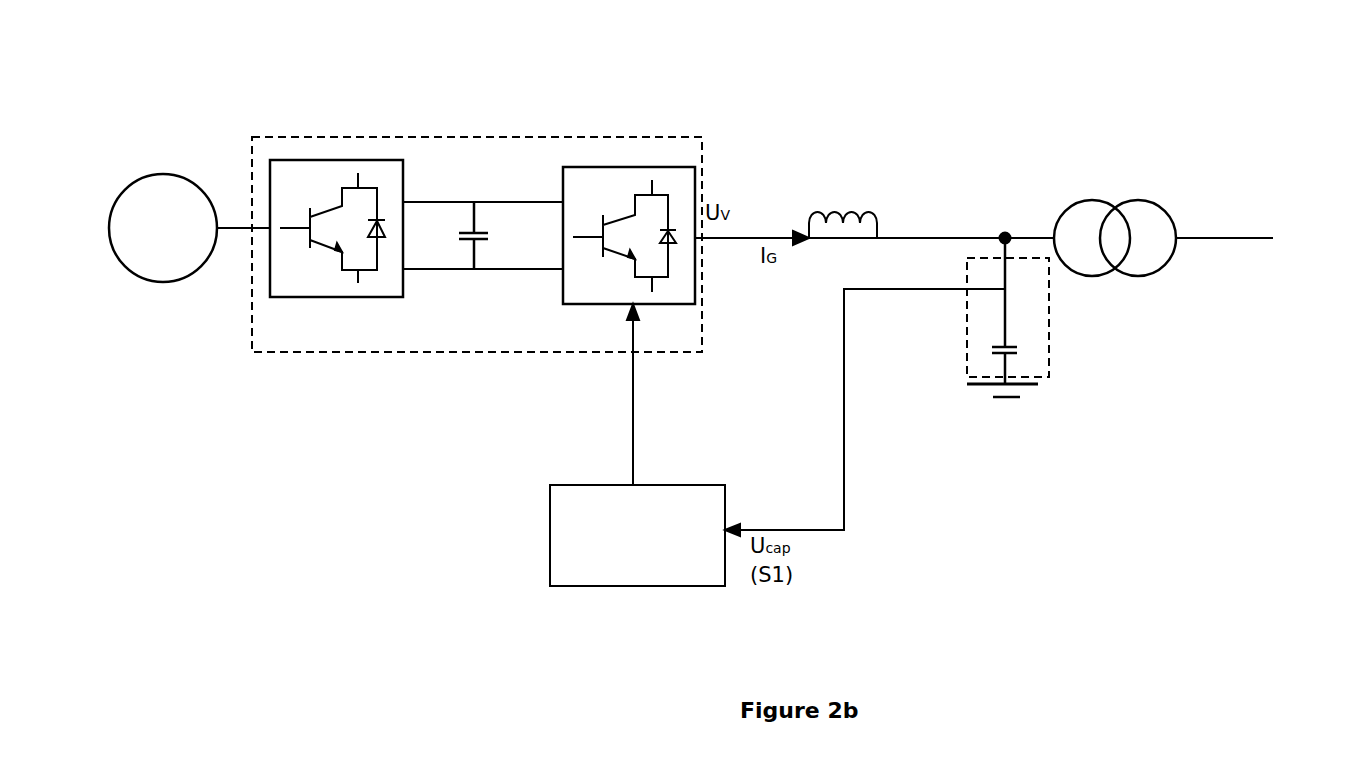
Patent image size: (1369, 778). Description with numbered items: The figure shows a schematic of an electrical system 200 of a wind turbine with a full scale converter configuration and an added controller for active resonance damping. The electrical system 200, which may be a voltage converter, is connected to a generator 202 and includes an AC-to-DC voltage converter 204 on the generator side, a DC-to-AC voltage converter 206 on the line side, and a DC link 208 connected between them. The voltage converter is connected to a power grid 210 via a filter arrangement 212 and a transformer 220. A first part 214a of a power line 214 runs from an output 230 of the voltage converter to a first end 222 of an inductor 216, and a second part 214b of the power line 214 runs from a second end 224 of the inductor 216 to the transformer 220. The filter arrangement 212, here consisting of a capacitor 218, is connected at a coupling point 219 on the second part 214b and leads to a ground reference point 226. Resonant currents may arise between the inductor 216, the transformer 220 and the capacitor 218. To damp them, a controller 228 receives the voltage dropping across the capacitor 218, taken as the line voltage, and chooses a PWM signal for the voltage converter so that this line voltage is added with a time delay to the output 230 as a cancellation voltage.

The electrical system 200 is at (402, 352).
The generator 202 is at (162, 282).
The AC-to-DC voltage converter 204 is at (335, 158).
The DC-to-AC voltage converter 206 is at (619, 167).
The DC link 208 is at (481, 233).
The power grid 210 is at (1260, 263).
The filter arrangement 212 is at (1049, 306).
The power line 214 is at (742, 237).
The first part of the power line 214a is at (731, 241).
The second part of the power line 214b is at (935, 240).
The inductor 216 is at (834, 224).
The capacitor 218 is at (1018, 353).
The coupling point 219 is at (1006, 232).
The transformer 220 is at (1077, 207).
The first end of the inductor 222 is at (787, 237).
The second end of the inductor 224 is at (897, 237).
The ground reference point 226 is at (1008, 405).
The controller 228 is at (637, 586).
The output of the voltage converter 230 is at (697, 240).